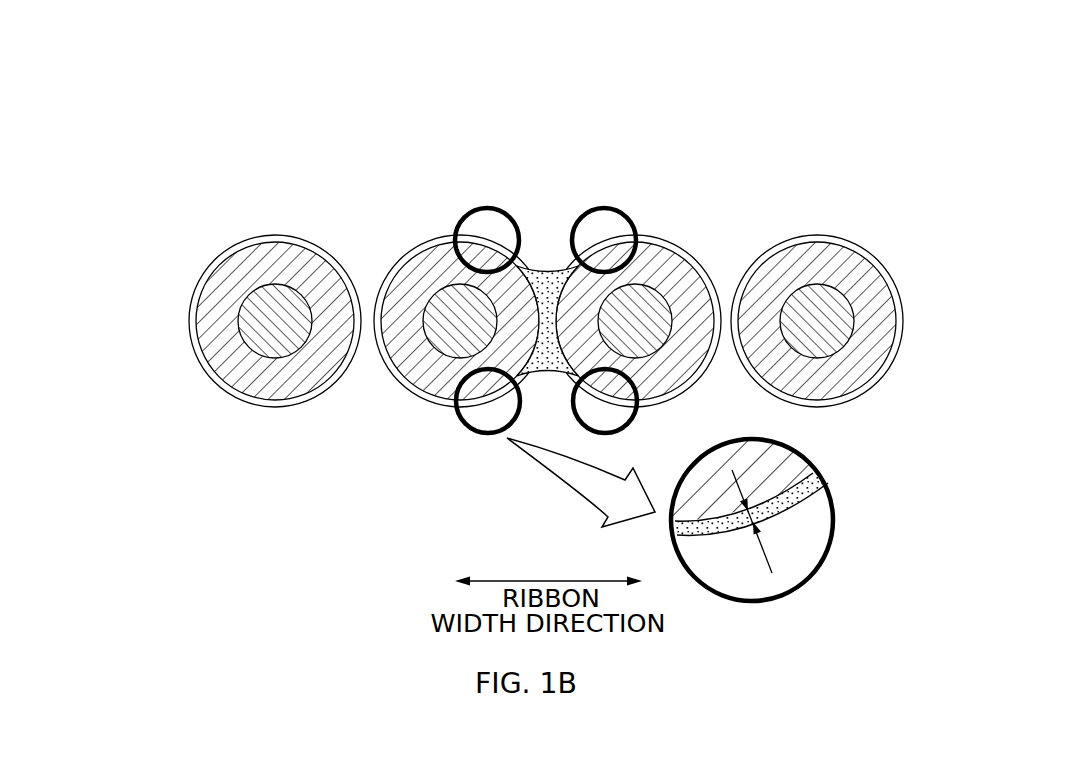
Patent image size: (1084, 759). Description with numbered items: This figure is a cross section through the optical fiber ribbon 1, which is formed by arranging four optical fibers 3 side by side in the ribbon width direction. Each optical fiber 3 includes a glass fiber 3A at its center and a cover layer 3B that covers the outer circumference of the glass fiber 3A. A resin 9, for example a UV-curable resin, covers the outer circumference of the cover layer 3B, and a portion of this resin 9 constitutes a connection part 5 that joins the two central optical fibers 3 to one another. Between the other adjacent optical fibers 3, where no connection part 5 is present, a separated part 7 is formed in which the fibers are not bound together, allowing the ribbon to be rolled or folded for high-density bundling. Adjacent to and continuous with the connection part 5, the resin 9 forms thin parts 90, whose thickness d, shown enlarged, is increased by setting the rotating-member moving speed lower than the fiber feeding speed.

The optical fiber ribbon 1 is at (410, 126).
The optical fiber 3 is at (546, 258).
The glass fiber 3A is at (270, 305).
The cover layer 3B is at (867, 187).
The connection part 5 is at (545, 278).
The separated part 7 is at (365, 262).
The resin 9 is at (213, 259).
The thin part 90 is at (472, 209).